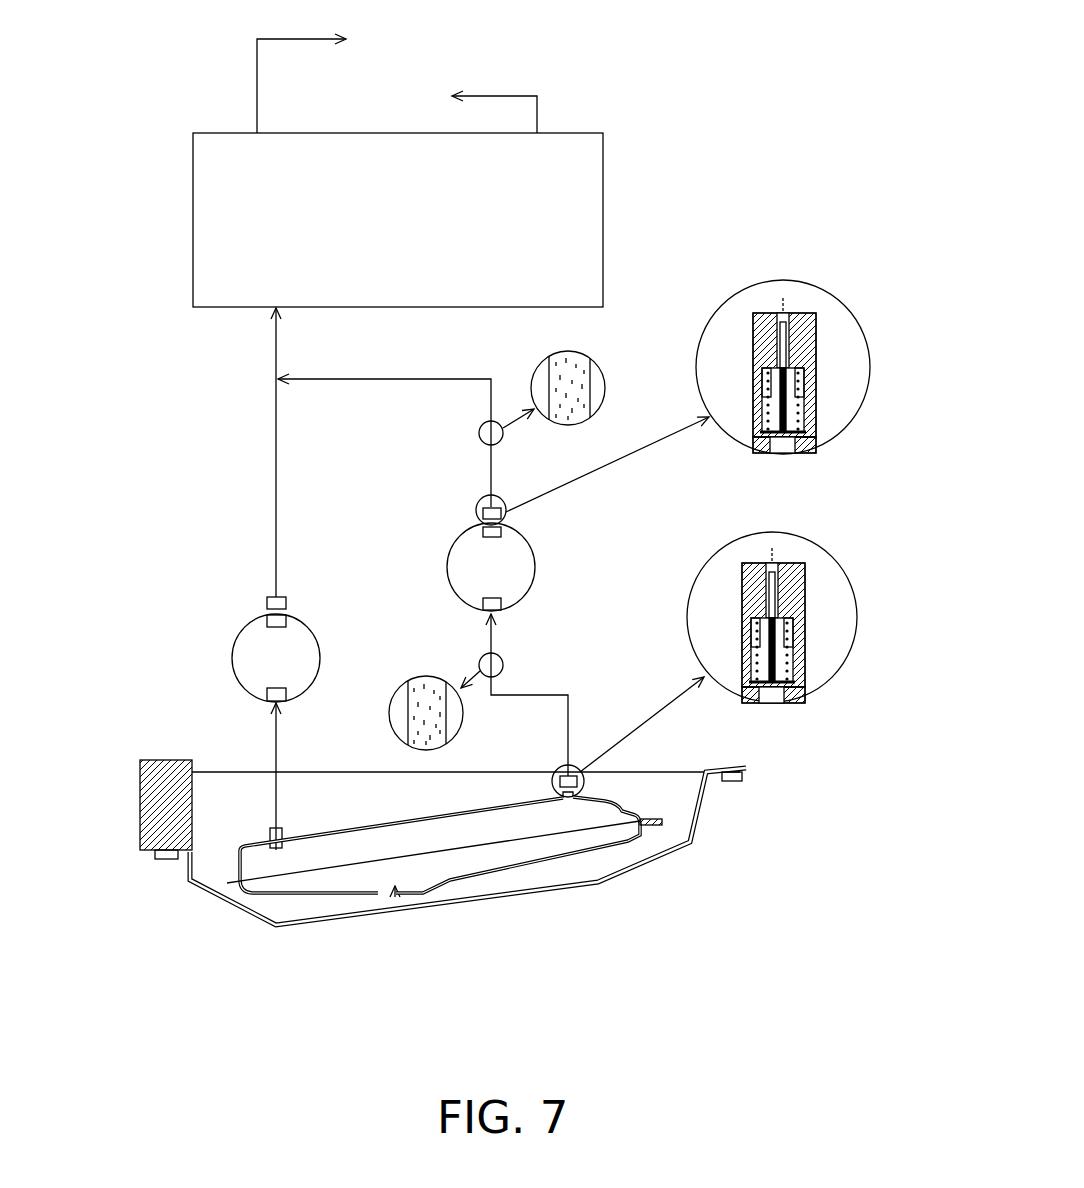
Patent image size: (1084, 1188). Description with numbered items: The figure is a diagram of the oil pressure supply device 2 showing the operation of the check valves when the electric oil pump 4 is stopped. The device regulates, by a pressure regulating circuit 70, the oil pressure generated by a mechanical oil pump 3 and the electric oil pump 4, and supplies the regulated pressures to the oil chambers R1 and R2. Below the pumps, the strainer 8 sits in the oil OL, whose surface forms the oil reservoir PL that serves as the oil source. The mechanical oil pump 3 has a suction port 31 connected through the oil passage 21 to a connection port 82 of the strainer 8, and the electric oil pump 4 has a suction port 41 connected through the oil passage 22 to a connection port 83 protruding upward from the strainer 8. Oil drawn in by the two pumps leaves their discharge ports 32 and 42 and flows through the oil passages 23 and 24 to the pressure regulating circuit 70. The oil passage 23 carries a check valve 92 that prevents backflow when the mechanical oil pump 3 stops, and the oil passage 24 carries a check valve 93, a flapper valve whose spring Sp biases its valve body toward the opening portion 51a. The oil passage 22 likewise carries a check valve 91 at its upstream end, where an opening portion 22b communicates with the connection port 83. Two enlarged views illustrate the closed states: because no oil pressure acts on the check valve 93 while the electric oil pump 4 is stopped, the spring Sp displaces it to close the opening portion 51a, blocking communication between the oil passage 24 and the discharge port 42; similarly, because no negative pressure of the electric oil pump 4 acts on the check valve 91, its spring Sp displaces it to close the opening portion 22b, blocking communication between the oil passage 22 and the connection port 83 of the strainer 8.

The oil pressure supply device 2 is at (180, 405).
The mechanical oil pump 3 is at (318, 633).
The electric oil pump 4 is at (538, 576).
The strainer 8 is at (276, 900).
The oil passage 21 is at (276, 745).
The oil passage 22 is at (562, 694).
The opening portion 22b is at (782, 702).
The oil passage 23 is at (276, 458).
The oil passage 24 is at (355, 380).
The suction port 31 is at (272, 697).
The discharge port 32 is at (272, 623).
The suction port 41 is at (483, 604).
The discharge port 42 is at (483, 533).
The opening portion 51a is at (798, 450).
The pressure regulating circuit 70 is at (193, 165).
The connection port 82 is at (270, 830).
The connection port 83 is at (582, 790).
The check valve 91 is at (552, 782).
The check valve 92 is at (267, 603).
The check valve 93 is at (483, 512).
The oil chamber R1 is at (346, 67).
The oil chamber R2 is at (449, 96).
The oil OL is at (580, 390).
The oil reservoir PL is at (322, 772).
The spring Sp is at (806, 411).